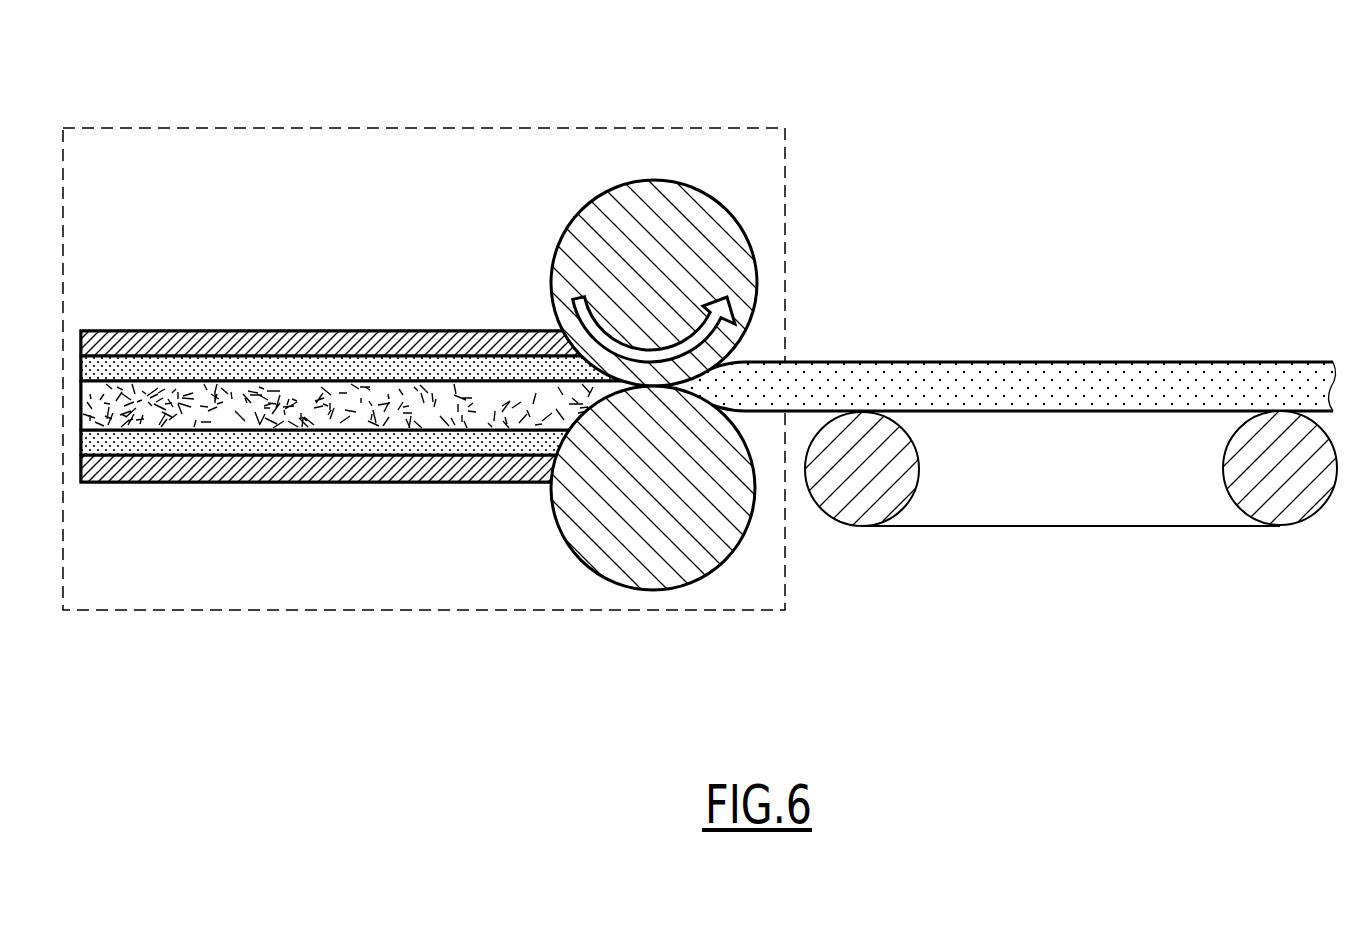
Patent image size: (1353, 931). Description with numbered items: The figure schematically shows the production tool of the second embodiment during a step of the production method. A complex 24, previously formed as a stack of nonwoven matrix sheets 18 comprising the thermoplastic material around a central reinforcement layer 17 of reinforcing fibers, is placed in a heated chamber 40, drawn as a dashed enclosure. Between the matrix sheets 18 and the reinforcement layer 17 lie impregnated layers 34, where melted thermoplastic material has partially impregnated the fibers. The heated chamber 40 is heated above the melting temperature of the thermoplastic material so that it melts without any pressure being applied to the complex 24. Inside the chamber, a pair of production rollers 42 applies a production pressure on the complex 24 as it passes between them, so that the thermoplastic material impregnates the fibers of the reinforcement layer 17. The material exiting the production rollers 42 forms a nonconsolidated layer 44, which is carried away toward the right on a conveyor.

The reinforcement layer 17 is at (449, 393).
The nonwoven matrix sheet 18 is at (204, 350).
The complex 24 is at (136, 274).
The impregnated layer 34 is at (322, 365).
The heated chamber 40 is at (261, 128).
The production rollers 42 is at (641, 205).
The nonconsolidated layer 44 is at (1042, 378).